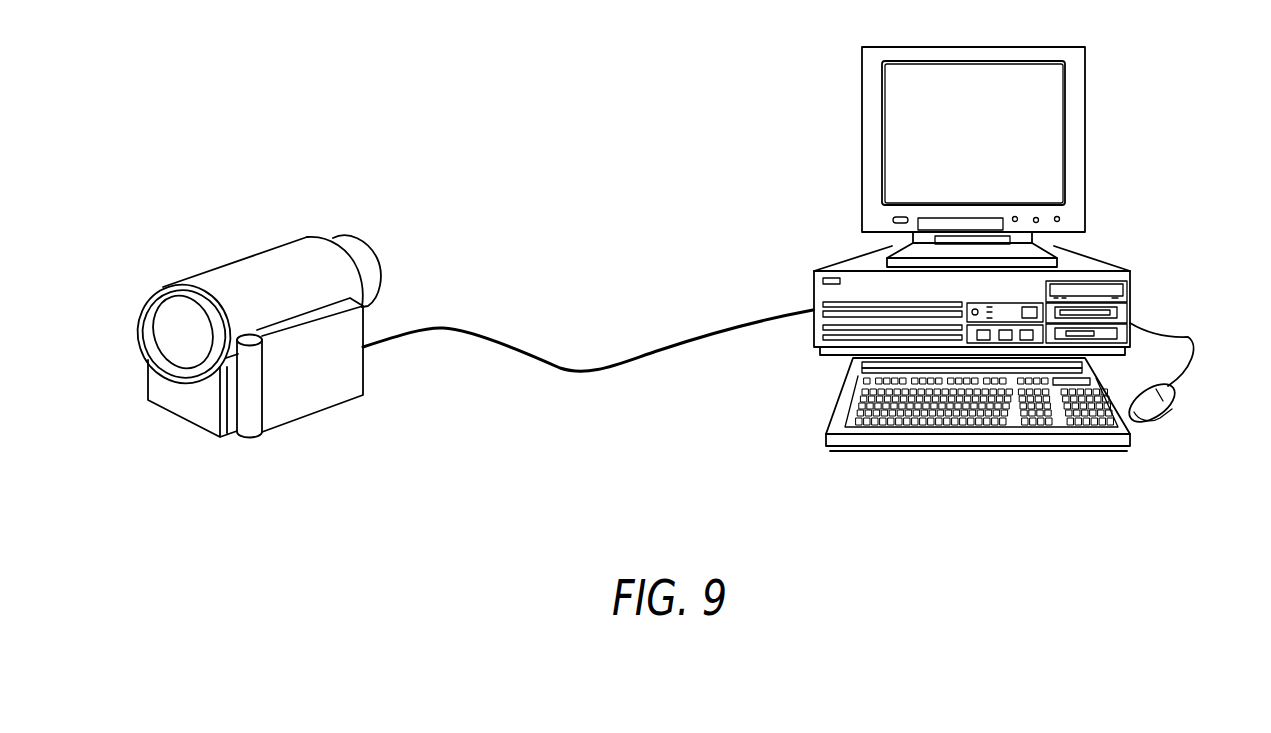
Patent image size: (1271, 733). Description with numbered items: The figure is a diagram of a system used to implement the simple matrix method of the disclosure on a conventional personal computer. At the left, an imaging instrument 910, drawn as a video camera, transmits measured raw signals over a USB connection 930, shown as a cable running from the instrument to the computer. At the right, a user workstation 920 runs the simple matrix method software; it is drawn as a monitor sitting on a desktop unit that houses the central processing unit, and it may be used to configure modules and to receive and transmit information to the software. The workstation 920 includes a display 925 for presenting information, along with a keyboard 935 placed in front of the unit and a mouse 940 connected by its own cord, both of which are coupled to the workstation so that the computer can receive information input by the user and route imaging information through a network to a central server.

The imaging instrument 910 is at (252, 277).
The workstation 920 is at (1034, 135).
The display 925 is at (1086, 160).
The USB connection 930 is at (493, 337).
The keyboard 935 is at (962, 448).
The mouse 940 is at (1188, 337).